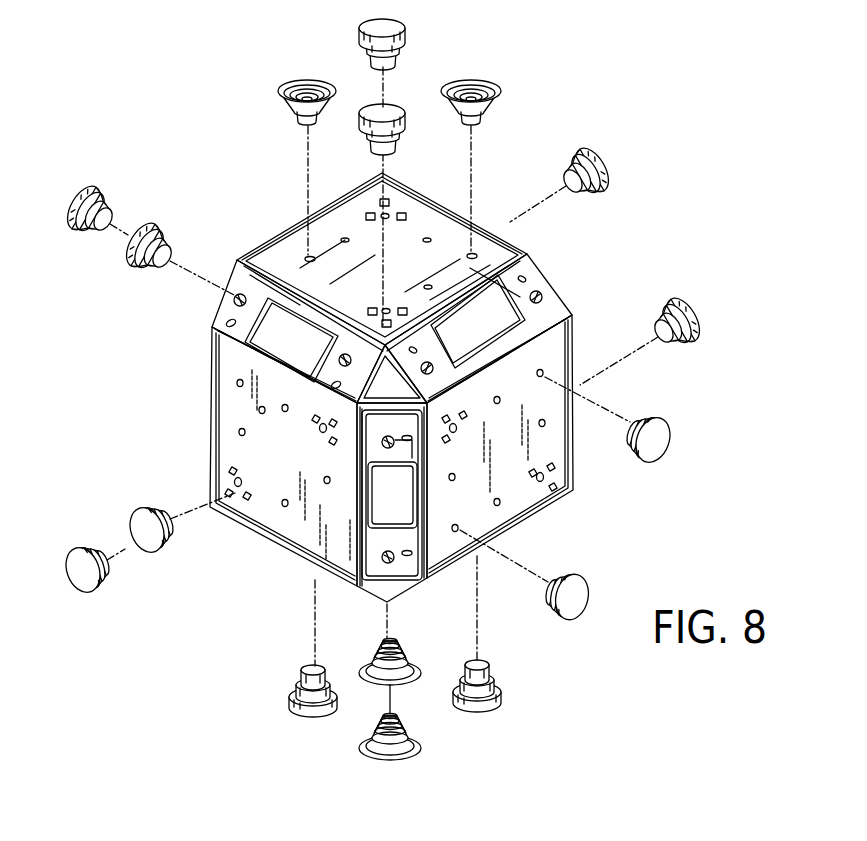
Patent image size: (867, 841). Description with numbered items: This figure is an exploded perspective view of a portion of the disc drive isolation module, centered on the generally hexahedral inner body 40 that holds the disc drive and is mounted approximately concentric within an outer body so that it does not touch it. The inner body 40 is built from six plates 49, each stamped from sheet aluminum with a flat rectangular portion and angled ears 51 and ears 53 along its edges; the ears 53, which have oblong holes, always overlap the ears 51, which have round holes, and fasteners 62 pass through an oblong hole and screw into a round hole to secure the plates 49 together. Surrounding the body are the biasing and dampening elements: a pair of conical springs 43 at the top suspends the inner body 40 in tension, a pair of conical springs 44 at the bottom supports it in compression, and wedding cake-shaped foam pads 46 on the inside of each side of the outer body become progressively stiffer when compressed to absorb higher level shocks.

The inner body 40 is at (520, 254).
The conical springs 43 is at (280, 95).
The conical springs 44 is at (374, 682).
The foam pads 46 is at (292, 682).
The plate 49 is at (600, 475).
The ears 51 is at (420, 530).
The ears 53 is at (390, 525).
The fasteners 62 is at (236, 301).